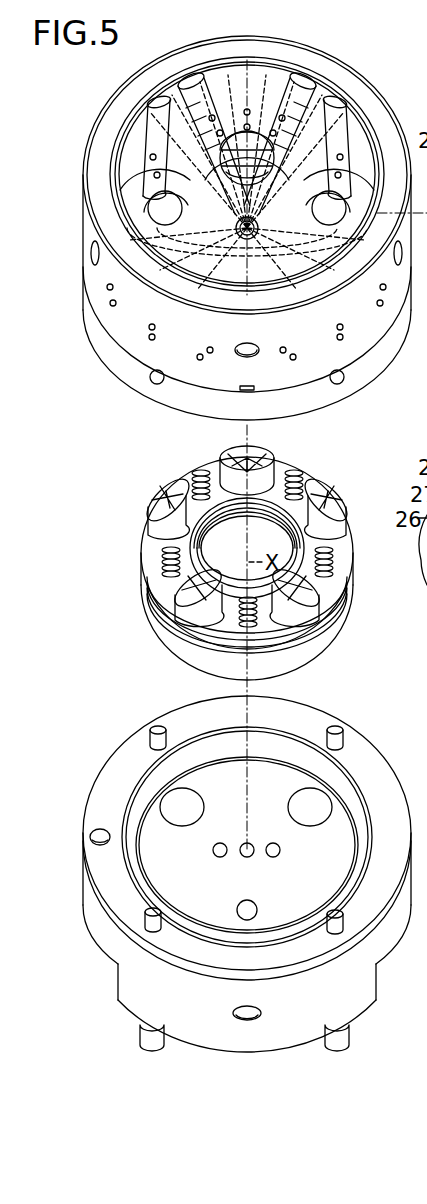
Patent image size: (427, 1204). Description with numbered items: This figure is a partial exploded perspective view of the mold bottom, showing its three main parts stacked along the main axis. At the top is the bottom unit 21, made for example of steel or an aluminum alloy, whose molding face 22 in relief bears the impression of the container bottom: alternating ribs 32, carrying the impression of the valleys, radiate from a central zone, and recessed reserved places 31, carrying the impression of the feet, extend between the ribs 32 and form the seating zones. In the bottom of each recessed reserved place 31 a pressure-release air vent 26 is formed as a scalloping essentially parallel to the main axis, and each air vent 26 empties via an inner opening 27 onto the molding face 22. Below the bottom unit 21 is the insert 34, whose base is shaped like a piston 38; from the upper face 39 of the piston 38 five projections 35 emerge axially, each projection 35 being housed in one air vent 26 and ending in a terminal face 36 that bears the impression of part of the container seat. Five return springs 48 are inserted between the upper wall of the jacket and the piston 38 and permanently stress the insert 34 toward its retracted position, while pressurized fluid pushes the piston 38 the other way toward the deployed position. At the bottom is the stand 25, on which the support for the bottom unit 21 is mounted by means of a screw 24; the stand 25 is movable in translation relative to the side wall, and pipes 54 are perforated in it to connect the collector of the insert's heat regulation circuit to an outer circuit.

The bottom unit 21 is at (118, 338).
The molding face 22 is at (337, 140).
The screw 24 is at (157, 727).
The stand 25 is at (100, 797).
The pressure-release air vent 26 is at (153, 210).
The inner opening 27 is at (148, 173).
The recessed reserved places 31 is at (123, 127).
The ribs 32 is at (173, 107).
The insert 34 is at (140, 545).
The projection 35 is at (272, 462).
The terminal face 36 is at (227, 450).
The piston 38 is at (143, 577).
The upper face 39 is at (163, 587).
The return spring 48 is at (195, 473).
The pipes 54 is at (185, 805).